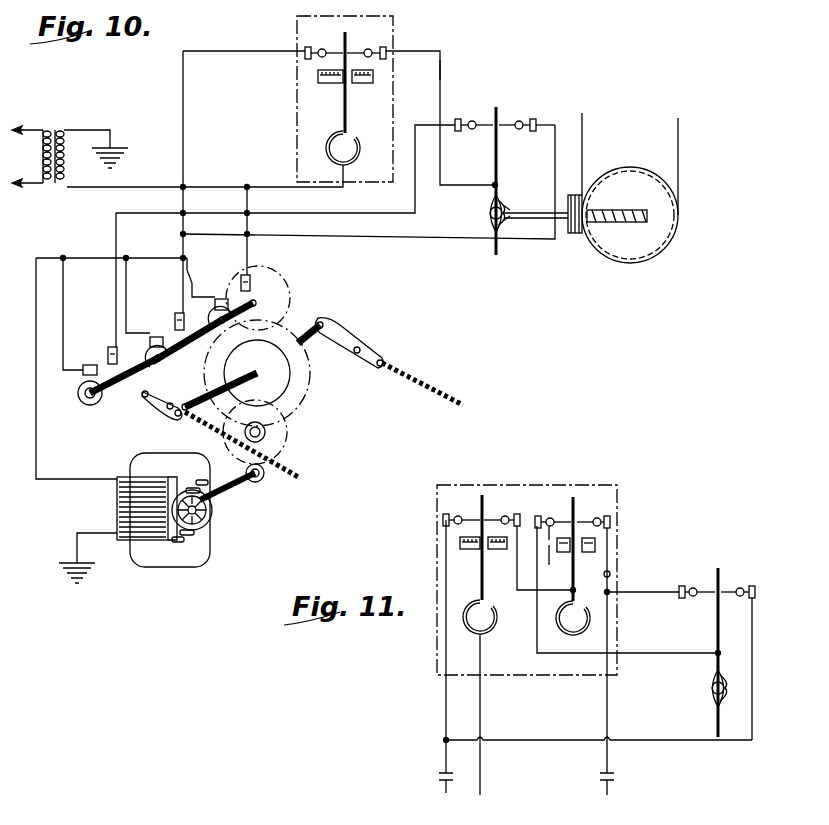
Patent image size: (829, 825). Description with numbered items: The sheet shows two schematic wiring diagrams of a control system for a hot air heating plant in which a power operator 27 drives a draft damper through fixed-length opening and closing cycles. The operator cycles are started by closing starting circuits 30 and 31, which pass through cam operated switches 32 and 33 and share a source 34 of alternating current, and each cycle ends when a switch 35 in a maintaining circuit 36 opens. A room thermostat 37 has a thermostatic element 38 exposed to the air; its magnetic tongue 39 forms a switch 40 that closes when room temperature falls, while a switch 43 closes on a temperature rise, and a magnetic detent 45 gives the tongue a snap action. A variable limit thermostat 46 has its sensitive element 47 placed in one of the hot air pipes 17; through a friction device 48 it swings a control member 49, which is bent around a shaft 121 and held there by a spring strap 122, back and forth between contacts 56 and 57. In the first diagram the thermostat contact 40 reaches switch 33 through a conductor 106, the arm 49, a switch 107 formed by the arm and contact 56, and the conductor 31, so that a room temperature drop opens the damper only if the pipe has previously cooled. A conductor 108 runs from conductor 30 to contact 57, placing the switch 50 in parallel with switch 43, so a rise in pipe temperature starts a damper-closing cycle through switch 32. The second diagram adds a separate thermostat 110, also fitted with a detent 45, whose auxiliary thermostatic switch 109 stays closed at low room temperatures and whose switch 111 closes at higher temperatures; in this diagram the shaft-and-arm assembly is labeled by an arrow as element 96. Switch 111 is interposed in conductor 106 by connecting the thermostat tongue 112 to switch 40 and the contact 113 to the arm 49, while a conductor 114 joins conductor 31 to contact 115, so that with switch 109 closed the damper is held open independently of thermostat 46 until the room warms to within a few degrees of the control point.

In FIG. 10, the hot air pipe 17 is at (660, 181).
In FIG. 10, the power operator 27 is at (151, 432).
In FIG. 10, the starting circuit 30 is at (183, 143).
In FIG. 11, the starting circuit 30 is at (444, 710).
In FIG. 10, the starting circuit 31 is at (158, 212).
In FIG. 11, the starting circuit 31 is at (605, 715).
In FIG. 10, the cam operated switch 32 is at (172, 316).
In FIG. 11, the cam operated switch 32 is at (437, 776).
In FIG. 10, the cam operated switch 33 is at (104, 340).
In FIG. 11, the cam operated switch 33 is at (600, 776).
In FIG. 10, the source of alternating current 34 is at (62, 152).
In FIG. 10, the switch 35 is at (247, 297).
In FIG. 10, the maintaining circuit 36 is at (36, 416).
In FIG. 10, the thermostat 37 is at (402, 109).
In FIG. 11, the thermostat 37 is at (465, 598).
In FIG. 10, the thermostatic element 38 is at (361, 154).
In FIG. 10, the tongue 39 is at (347, 112).
In FIG. 11, the tongue 39 is at (484, 556).
In FIG. 10, the switch 40 is at (348, 50).
In FIG. 11, the switch 40 is at (484, 516).
In FIG. 10, the switch 43 is at (343, 50).
In FIG. 11, the switch 43 is at (480, 516).
In FIG. 10, the magnetic detent 45 is at (318, 80).
In FIG. 10, the thermostat 46 is at (480, 233).
In FIG. 10, the sensitive element 47 is at (625, 224).
In FIG. 10, the device 48 is at (502, 200).
In FIG. 11, the device 48 is at (726, 696).
In FIG. 10, the control member 49 is at (499, 160).
In FIG. 11, the control member 49 is at (716, 627).
In FIG. 10, the switch 50 is at (519, 120).
In FIG. 11, the switch 50 is at (740, 588).
In FIG. 10, the contact 56 is at (458, 119).
In FIG. 11, the contact 56 is at (682, 586).
In FIG. 10, the contact 57 is at (534, 119).
In FIG. 11, the contact 57 is at (756, 593).
In FIG. 11, the eccentric drive 96 is at (704, 710).
In FIG. 10, the conductor 106 is at (440, 74).
In FIG. 11, the conductor 106 is at (648, 653).
In FIG. 10, the switch 107 is at (494, 118).
In FIG. 11, the switch 107 is at (716, 588).
In FIG. 10, the conductor 108 is at (377, 236).
In FIG. 11, the conductor 108 is at (542, 740).
In FIG. 11, the auxiliary thermostatic switch 109 is at (575, 518).
In FIG. 11, the thermostat 110 is at (597, 558).
In FIG. 11, the switch 111 is at (571, 518).
In FIG. 11, the thermostat tongue 112 is at (571, 528).
In FIG. 11, the contact 113 is at (550, 560).
In FIG. 11, the conductor 114 is at (610, 573).
In FIG. 11, the contact 115 is at (610, 520).
In FIG. 10, the shaft 121 is at (489, 213).
In FIG. 11, the shaft 121 is at (711, 689).
In FIG. 10, the spring strap 122 is at (491, 205).
In FIG. 11, the spring strap 122 is at (713, 680).